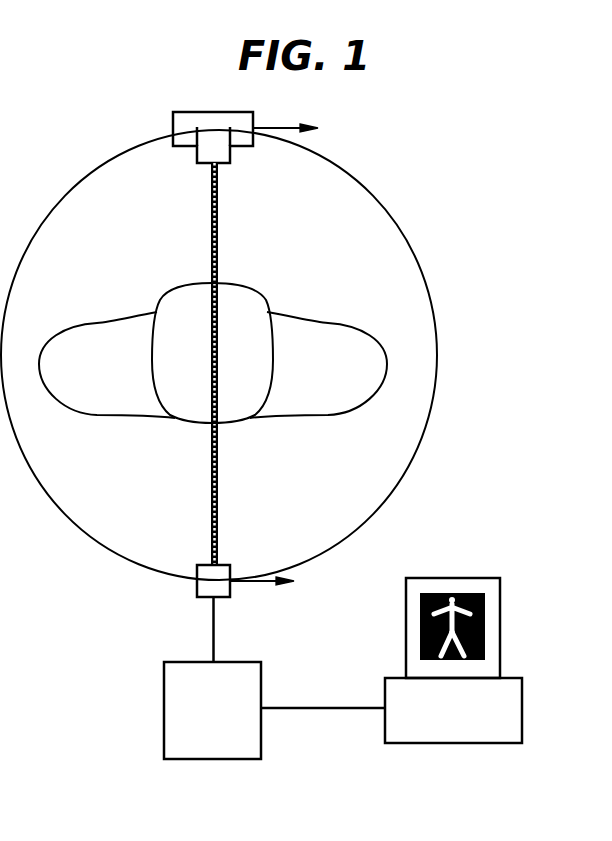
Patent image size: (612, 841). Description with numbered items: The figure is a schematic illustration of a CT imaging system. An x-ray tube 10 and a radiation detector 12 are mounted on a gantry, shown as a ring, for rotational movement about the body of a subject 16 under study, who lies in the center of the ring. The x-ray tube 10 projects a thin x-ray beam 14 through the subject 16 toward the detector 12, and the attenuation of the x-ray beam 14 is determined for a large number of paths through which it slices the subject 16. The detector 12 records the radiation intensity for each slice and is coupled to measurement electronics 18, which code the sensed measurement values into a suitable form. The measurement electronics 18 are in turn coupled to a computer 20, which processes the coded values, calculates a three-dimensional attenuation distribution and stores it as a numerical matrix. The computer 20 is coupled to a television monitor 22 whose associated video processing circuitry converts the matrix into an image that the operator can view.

The x-ray tube 10 is at (174, 128).
The radiation detector 12 is at (222, 590).
The x-ray beam 14 is at (218, 202).
The subject 16 is at (240, 410).
The measurement electronics 18 is at (164, 683).
The computer 20 is at (522, 705).
The television monitor 22 is at (500, 630).